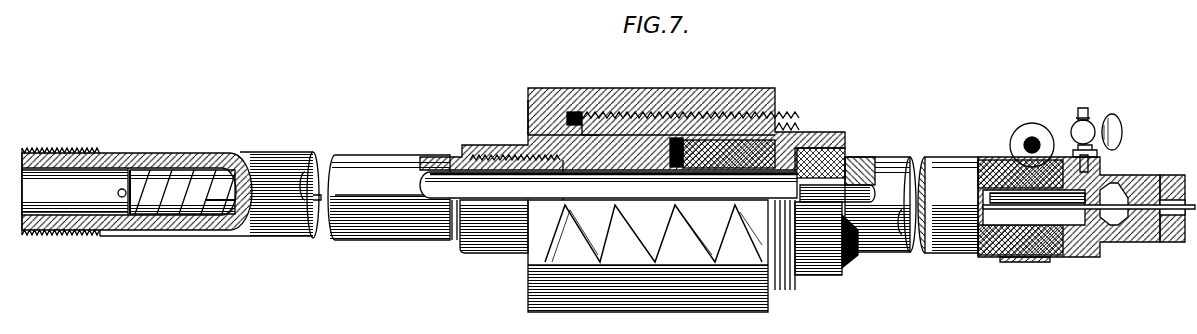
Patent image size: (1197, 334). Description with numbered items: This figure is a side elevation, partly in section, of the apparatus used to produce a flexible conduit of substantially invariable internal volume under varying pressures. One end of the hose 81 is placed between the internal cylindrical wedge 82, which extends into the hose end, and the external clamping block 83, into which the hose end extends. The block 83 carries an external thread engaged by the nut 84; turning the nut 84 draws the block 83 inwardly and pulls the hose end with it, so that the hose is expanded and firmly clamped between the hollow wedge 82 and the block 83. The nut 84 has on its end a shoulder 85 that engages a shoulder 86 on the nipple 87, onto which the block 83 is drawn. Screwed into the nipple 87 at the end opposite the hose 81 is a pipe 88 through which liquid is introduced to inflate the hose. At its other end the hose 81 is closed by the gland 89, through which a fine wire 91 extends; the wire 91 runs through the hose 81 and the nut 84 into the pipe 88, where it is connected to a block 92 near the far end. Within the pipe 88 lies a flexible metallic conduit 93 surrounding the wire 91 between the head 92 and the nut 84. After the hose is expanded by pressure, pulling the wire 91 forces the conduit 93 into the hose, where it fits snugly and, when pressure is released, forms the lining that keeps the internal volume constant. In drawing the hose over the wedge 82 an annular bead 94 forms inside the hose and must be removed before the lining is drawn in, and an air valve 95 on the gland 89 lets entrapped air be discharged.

The hose 81 is at (884, 160).
The internal cylindrical wedge 82 is at (645, 180).
The external clamping block 83 is at (797, 127).
The nut 84 is at (733, 97).
The shoulder 85 is at (528, 117).
The shoulder 86 is at (576, 112).
The nipple 87 is at (628, 143).
The pipe 88 is at (372, 160).
The gland 89 is at (1120, 180).
The fine wire 91 is at (1150, 212).
The block 92 is at (132, 182).
The flexible metallic conduit 93 is at (202, 173).
The annular bead 94 is at (805, 201).
The air valve 95 is at (1080, 124).